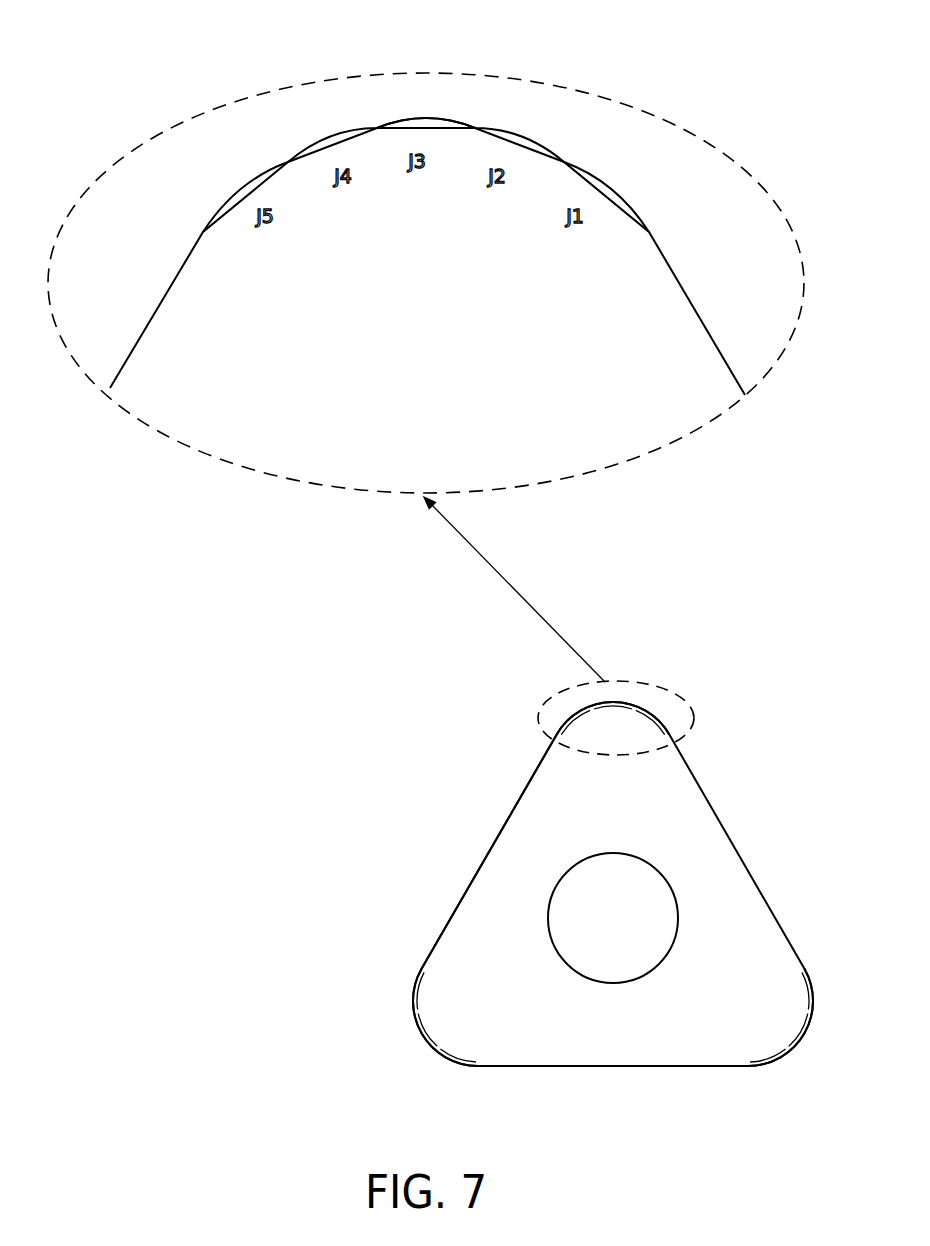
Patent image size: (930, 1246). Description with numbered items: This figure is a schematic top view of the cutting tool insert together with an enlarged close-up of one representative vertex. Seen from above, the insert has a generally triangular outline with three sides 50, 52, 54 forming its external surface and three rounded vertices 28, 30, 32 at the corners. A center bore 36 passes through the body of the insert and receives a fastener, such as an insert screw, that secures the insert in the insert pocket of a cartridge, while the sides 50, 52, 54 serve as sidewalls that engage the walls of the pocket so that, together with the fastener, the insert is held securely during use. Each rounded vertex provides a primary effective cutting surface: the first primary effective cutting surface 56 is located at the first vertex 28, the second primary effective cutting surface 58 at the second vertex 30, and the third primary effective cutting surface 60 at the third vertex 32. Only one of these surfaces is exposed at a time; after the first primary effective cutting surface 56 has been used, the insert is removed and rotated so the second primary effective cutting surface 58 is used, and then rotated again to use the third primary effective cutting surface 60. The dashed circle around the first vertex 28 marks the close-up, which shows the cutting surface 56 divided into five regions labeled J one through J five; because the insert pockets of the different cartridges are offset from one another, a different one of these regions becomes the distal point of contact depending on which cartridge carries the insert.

The first rounded vertex 28 is at (622, 182).
The second rounded vertex 30 is at (806, 1052).
The third rounded vertex 32 is at (443, 1072).
The center bore 36 is at (601, 920).
The first side 50 is at (718, 808).
The second side 52 is at (622, 1068).
The third side 54 is at (500, 822).
The first primary effective cutting surface 56 is at (424, 104).
The second primary effective cutting surface 58 is at (808, 1028).
The third primary effective cutting surface 60 is at (424, 1032).